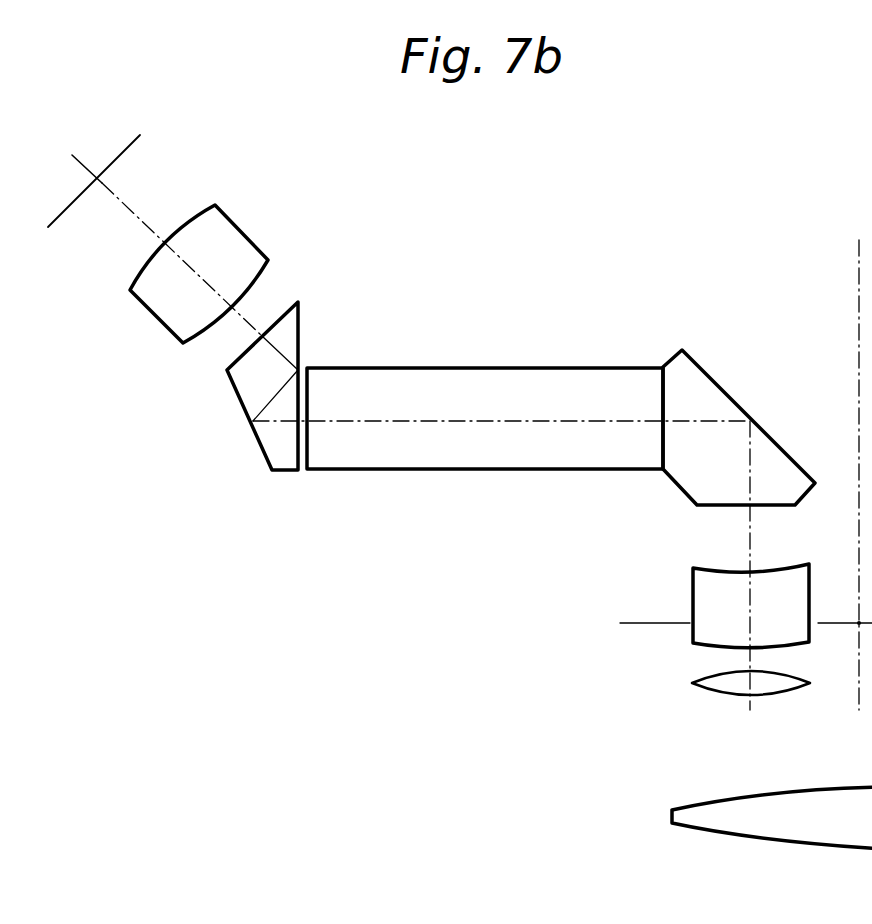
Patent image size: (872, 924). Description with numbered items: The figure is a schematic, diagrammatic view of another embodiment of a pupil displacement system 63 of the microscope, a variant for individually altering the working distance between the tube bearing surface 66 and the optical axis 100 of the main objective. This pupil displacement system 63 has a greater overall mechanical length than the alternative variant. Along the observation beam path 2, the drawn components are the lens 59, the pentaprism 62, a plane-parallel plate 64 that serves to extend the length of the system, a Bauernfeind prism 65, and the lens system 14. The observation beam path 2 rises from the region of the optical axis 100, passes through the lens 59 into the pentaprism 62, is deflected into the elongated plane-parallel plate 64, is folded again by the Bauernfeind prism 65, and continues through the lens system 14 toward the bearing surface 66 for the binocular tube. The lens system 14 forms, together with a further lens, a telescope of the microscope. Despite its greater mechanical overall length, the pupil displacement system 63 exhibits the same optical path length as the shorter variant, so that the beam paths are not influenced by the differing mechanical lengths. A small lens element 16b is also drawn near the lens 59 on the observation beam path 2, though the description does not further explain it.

The bearing surface for the binocular tube 66 is at (117, 153).
The lens system 14 is at (245, 250).
The Bauernfeind prism 65 is at (288, 340).
The plane-parallel plate 64 is at (522, 380).
The pentaprism 62 is at (703, 393).
The observation beam path 2 is at (751, 710).
The optical axis of the main objective 100 is at (857, 253).
The lens 59 is at (708, 592).
The lens 16b is at (717, 687).
The pupil displacement system 63 is at (435, 522).